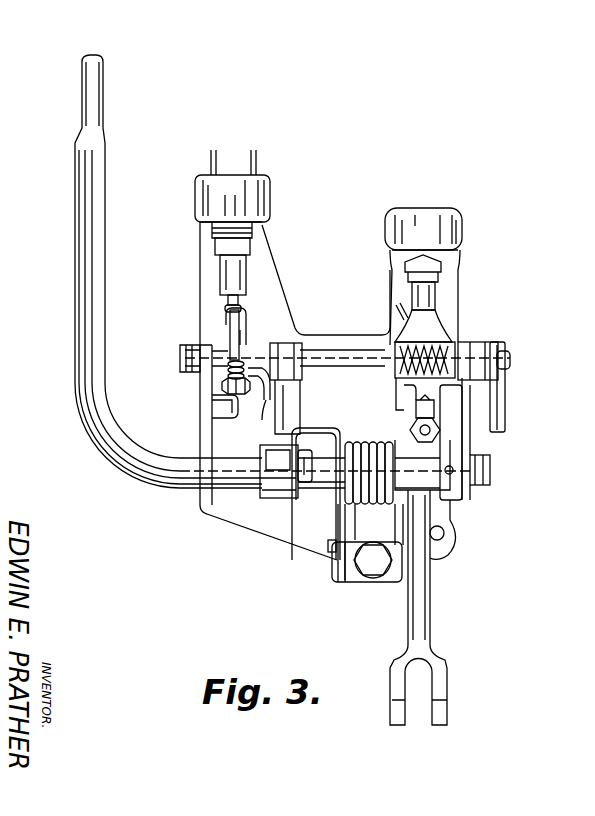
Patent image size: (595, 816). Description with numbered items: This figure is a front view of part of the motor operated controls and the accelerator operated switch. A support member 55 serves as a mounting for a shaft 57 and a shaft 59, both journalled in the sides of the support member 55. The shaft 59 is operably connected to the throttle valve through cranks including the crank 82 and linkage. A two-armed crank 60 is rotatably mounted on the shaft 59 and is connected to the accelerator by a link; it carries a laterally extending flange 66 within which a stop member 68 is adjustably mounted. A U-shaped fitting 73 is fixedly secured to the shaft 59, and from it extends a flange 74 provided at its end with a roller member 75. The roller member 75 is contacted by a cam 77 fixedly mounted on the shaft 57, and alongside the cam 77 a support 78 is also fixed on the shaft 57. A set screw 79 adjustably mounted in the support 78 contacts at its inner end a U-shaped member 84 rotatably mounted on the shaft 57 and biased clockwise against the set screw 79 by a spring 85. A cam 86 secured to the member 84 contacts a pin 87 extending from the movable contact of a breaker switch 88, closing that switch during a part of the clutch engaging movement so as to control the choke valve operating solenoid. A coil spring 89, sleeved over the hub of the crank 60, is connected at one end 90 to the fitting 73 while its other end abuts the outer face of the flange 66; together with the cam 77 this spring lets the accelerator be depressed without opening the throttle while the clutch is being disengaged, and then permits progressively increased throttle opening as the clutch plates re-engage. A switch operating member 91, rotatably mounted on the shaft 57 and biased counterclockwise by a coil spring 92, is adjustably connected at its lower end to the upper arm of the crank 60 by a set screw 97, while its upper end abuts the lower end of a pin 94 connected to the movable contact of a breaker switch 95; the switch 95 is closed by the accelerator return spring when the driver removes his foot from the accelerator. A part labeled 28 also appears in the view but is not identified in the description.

The crank 82 is at (77, 198).
The breaker switch 88 is at (262, 188).
The breaker switch 95 is at (452, 226).
The pin 87 is at (243, 297).
The spring 85 is at (250, 338).
The cam 86 is at (231, 333).
The shaft 57 is at (325, 350).
The pin 94 is at (428, 330).
The switch operating member 91 is at (432, 340).
The coil spring 92 is at (447, 339).
The arm 28 is at (503, 399).
The set screw 79 is at (228, 380).
The U-shaped member 84 is at (215, 410).
The cam 77 is at (283, 414).
The support 78 is at (266, 392).
The U-shaped fitting 73 is at (318, 433).
The roller member 75 is at (283, 472).
The flange 74 is at (303, 475).
The coil spring 89 is at (365, 440).
The set screw 97 is at (437, 430).
The shaft 59 is at (232, 482).
The support member 55 is at (232, 518).
The end of spring 90 is at (328, 548).
The stop member 68 is at (355, 576).
The flange 66 is at (392, 580).
The two-armed crank 60 is at (427, 605).